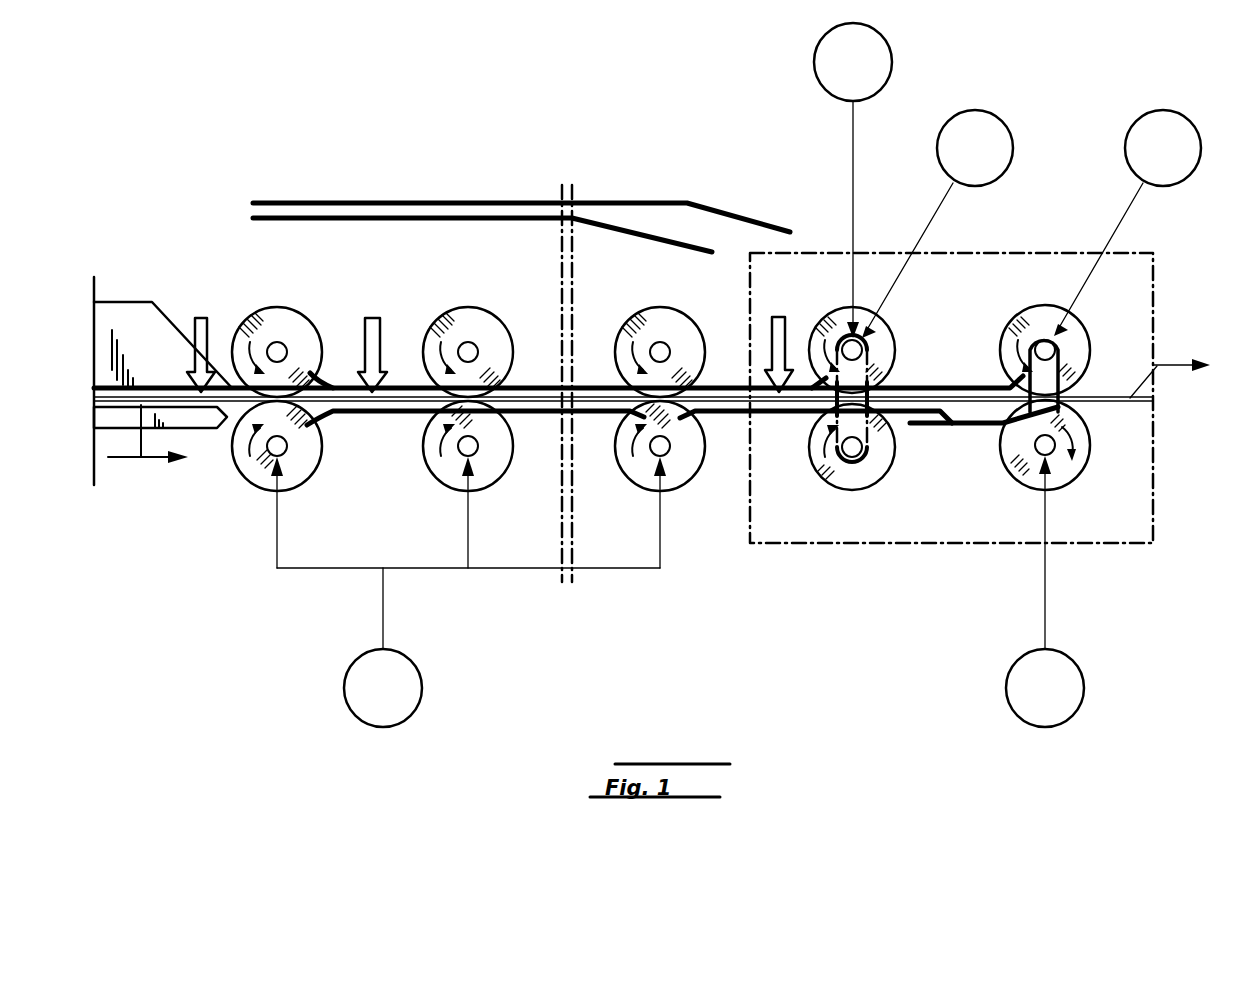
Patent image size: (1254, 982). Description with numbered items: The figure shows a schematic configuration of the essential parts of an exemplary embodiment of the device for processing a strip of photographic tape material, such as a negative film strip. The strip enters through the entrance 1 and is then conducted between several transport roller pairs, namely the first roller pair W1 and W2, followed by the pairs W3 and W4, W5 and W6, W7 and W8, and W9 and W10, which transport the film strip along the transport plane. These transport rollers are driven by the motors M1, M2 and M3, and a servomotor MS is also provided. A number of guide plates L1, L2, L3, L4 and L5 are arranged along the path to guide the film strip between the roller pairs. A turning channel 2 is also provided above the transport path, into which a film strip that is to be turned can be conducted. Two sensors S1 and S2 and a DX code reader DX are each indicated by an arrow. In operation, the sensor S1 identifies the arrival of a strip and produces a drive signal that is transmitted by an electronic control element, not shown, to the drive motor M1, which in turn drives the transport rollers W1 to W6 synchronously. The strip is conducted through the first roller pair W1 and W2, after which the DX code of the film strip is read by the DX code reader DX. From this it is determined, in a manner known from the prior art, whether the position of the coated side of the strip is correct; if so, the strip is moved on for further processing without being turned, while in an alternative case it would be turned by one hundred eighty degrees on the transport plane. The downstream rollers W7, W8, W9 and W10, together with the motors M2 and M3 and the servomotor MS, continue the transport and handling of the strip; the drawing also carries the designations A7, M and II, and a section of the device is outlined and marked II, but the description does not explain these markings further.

The entrance 1 is at (130, 315).
The turning channel 2 is at (612, 213).
The sensor S1 is at (203, 317).
The sensor S2 is at (778, 317).
The DX code reader DX is at (370, 318).
The transport roller W1 is at (275, 318).
The transport roller W2 is at (260, 475).
The transport roller W3 is at (465, 318).
The transport roller W4 is at (443, 468).
The transport roller W5 is at (648, 323).
The transport roller W6 is at (650, 470).
The transport roller W7 is at (880, 337).
The transport roller W8 is at (857, 482).
The transport roller W9 is at (1072, 338).
The transport roller W10 is at (1063, 470).
The roller axis/belt loop A7 is at (862, 352).
The guide plate L1 is at (535, 385).
The guide plate L2 is at (537, 414).
The guide plate L3 is at (782, 418).
The guide plate L4 is at (963, 382).
The guide plate L5 is at (973, 428).
The motor M is at (1201, 150).
The drive motor M1 is at (405, 682).
The motor M2 is at (815, 57).
The motor M3 is at (1077, 680).
The servomotor MS is at (1013, 135).
The section II is at (1153, 270).